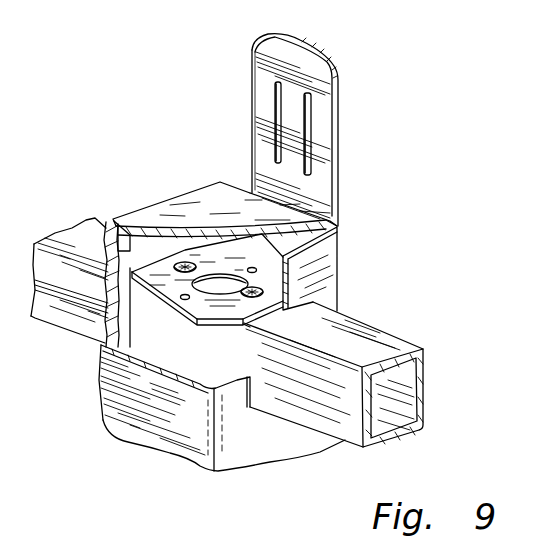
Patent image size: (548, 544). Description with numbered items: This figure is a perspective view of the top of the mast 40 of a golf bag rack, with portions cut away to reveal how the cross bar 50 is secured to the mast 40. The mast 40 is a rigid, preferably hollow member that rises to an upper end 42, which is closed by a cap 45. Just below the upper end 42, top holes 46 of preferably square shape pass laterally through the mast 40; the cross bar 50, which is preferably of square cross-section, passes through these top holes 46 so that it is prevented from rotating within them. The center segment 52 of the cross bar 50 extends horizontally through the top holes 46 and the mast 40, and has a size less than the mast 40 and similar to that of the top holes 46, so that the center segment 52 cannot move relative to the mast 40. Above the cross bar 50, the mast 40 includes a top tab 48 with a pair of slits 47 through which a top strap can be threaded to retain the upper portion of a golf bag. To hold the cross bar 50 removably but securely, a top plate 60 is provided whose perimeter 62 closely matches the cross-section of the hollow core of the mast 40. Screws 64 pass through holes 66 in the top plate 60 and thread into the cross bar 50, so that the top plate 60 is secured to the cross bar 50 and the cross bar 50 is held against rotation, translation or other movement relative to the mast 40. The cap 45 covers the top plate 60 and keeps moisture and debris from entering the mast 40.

The mast 40 is at (100, 388).
The upper end 42 is at (327, 263).
The cap 45 is at (180, 210).
The top holes 46 is at (248, 408).
The slits 47 is at (278, 110).
The top tab 48 is at (310, 63).
The cross bar 50 is at (345, 337).
The center segment 52 is at (390, 343).
The top plate 60 is at (224, 310).
The perimeter 62 is at (150, 307).
The screws 64 is at (187, 263).
The holes 66 is at (185, 300).